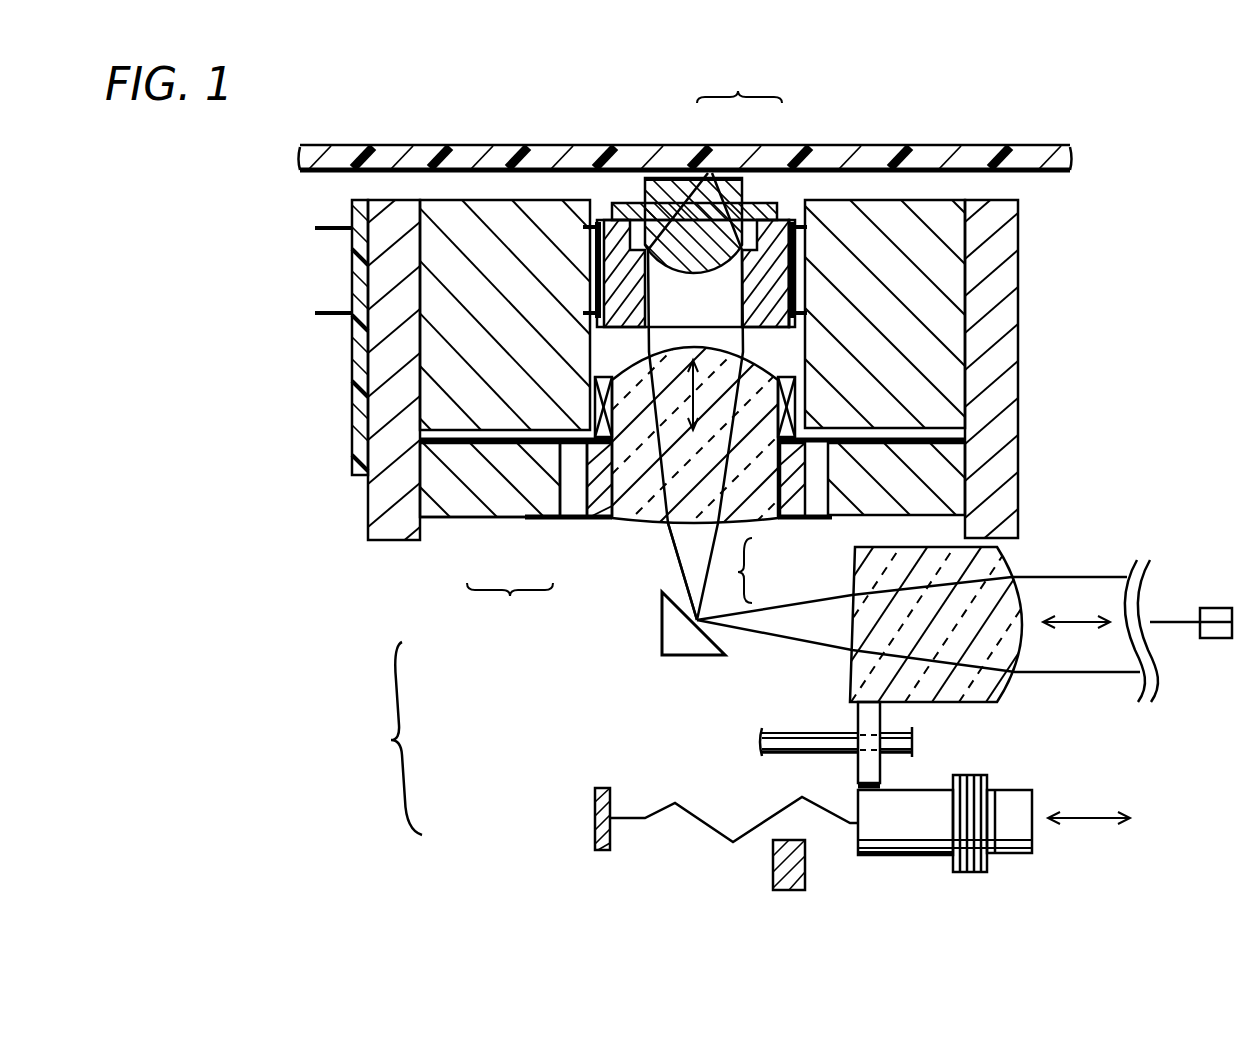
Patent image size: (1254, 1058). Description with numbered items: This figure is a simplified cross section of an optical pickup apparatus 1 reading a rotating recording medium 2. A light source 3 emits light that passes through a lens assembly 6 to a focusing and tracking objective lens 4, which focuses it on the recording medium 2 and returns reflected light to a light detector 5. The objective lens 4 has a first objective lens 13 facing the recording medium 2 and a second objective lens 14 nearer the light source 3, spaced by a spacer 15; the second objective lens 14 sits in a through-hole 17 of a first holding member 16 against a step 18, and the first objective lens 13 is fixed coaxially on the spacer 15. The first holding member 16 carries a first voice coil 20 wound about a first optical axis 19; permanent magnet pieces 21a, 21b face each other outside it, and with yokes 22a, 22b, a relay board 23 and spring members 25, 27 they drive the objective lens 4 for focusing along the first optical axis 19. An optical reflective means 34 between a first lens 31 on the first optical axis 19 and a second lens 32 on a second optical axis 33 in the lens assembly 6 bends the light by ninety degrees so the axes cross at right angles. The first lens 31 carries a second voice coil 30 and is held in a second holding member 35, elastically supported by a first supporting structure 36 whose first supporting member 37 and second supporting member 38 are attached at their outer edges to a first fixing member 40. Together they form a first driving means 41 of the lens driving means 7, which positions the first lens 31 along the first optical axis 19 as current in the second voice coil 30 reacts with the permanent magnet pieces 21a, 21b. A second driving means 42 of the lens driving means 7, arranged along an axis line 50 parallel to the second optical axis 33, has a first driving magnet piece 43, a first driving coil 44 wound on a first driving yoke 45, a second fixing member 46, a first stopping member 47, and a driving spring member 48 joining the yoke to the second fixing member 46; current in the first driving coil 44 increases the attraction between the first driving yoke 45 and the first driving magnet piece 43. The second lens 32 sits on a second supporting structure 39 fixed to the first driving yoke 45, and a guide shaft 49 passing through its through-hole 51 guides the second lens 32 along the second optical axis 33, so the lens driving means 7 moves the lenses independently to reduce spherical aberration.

The optical pickup apparatus 1 is at (998, 98).
The recording medium 2 is at (885, 155).
The light source 3 is at (1215, 607).
The focusing and tracking objective lens 4 is at (691, 166).
The light detector 5 is at (1215, 640).
The lens assembly 6 is at (895, 612).
The lens driving means 7 is at (752, 778).
The first objective lens 13 is at (727, 183).
The second objective lens 14 is at (762, 201).
The spacer 15 is at (627, 218).
The first holding member 16 is at (589, 218).
The through-hole 17 is at (663, 313).
The step 18 is at (737, 294).
The first optical axis 19 is at (641, 522).
The first voice coil 20 is at (797, 217).
The permanent magnet piece 21a is at (435, 260).
The permanent magnet piece 21b is at (950, 265).
The yoke 22a is at (378, 412).
The yoke 22b is at (1005, 358).
The relay board 23 is at (358, 362).
The second spring member 25 is at (322, 228).
The fourth spring member 27 is at (322, 313).
The second voice coil 30 is at (786, 378).
The first lens 31 is at (730, 571).
The second lens 32 is at (860, 578).
The second optical axis 33 is at (1075, 630).
The optical reflective means 34 is at (662, 628).
The second holding member 35 is at (597, 510).
The first supporting structure 36 is at (510, 605).
The first supporting member 37 is at (503, 493).
The second supporting member 38 is at (537, 517).
The second supporting structure 39 is at (873, 714).
The first fixing member 40 is at (438, 505).
The first driving means 41 is at (478, 622).
The second driving means 42 is at (560, 811).
The first driving magnet piece 43 is at (1015, 850).
The first driving coil 44 is at (968, 858).
The first driving yoke 45 is at (905, 835).
The second fixing member 46 is at (600, 850).
The first stopping member 47 is at (795, 885).
The driving spring member 48 is at (705, 842).
The guide shaft 49 is at (912, 742).
The axis line 50 is at (1100, 824).
The through-hole 51 is at (858, 765).